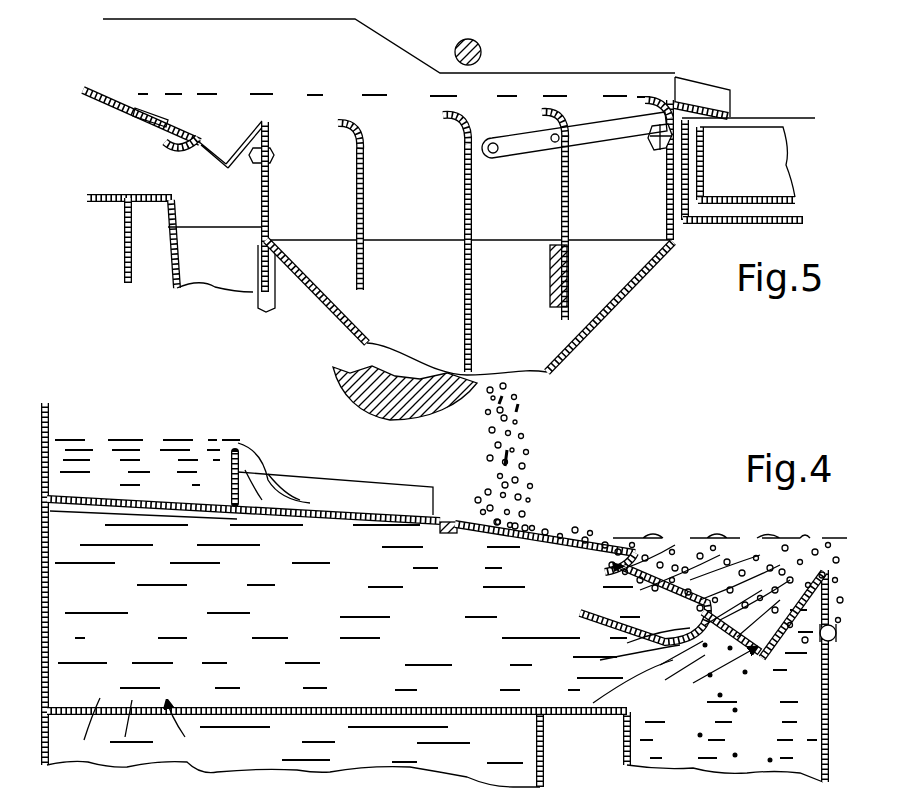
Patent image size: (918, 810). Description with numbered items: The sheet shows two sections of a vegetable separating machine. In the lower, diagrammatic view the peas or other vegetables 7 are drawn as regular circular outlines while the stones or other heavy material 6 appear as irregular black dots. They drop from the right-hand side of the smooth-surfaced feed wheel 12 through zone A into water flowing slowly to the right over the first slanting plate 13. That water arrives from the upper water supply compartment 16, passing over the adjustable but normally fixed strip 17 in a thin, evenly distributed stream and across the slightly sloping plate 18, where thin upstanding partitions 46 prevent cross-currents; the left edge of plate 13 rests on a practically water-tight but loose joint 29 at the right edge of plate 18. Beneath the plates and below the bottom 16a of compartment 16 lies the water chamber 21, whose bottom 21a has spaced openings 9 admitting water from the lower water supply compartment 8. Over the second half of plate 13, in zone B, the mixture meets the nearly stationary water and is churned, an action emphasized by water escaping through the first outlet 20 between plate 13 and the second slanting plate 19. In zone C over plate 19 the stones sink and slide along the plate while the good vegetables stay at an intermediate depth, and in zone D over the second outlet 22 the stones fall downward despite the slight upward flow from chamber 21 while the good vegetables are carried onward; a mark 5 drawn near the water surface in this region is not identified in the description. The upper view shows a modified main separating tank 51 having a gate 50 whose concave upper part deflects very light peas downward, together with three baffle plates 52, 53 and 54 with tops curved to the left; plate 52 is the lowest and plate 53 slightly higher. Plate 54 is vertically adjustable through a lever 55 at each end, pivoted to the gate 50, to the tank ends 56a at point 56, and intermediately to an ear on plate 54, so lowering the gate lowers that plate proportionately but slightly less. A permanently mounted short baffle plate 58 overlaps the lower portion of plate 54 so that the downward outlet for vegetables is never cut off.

In FIG. 4, the water surface 5 is at (730, 520).
In FIG. 4, the stones or other heavy material 6 is at (515, 457).
In FIG. 4, the peas or other vegetables 7 is at (659, 564).
In FIG. 4, the lower water supply compartment 8 is at (463, 686).
In FIG. 4, the spaced openings 9 is at (134, 705).
In FIG. 4, the feed wheel 12 is at (353, 377).
In FIG. 4, the first slanting plate 13 is at (585, 551).
In FIG. 4, the upper water supply compartment 16 is at (156, 457).
In FIG. 4, the bottom of compartment 16a is at (62, 505).
In FIG. 4, the adjustable but normally fixed strip 17 is at (227, 467).
In FIG. 4, the slightly sloping plate 18 is at (243, 529).
In FIG. 4, the second slanting plate 19 is at (644, 604).
In FIG. 4, the first outlet 20 is at (604, 570).
In FIG. 4, the water chamber 21 is at (347, 607).
In FIG. 4, the bottom of water chamber 21a is at (337, 695).
In FIG. 4, the second outlet 22 is at (745, 652).
In FIG. 4, the loose joint 29 is at (452, 534).
In FIG. 4, the thin upstanding partitions 46 is at (338, 487).
In FIG. 5, the gate 50 is at (657, 100).
In FIG. 5, the main separating tank 51 is at (291, 207).
In FIG. 5, the baffle plate 52 is at (362, 206).
In FIG. 5, the baffle plate 53 is at (463, 193).
In FIG. 5, the baffle plate 54 is at (562, 177).
In FIG. 5, the lever 55 is at (600, 133).
In FIG. 5, the pivot point 56 is at (493, 143).
In FIG. 5, the ends of tank 56a is at (433, 143).
In FIG. 5, the permanently mounted short baffle plate 58 is at (557, 303).
In FIG. 4, the zone A is at (502, 480).
In FIG. 4, the zone B is at (582, 528).
In FIG. 4, the zone C is at (672, 562).
In FIG. 4, the zone D is at (778, 563).